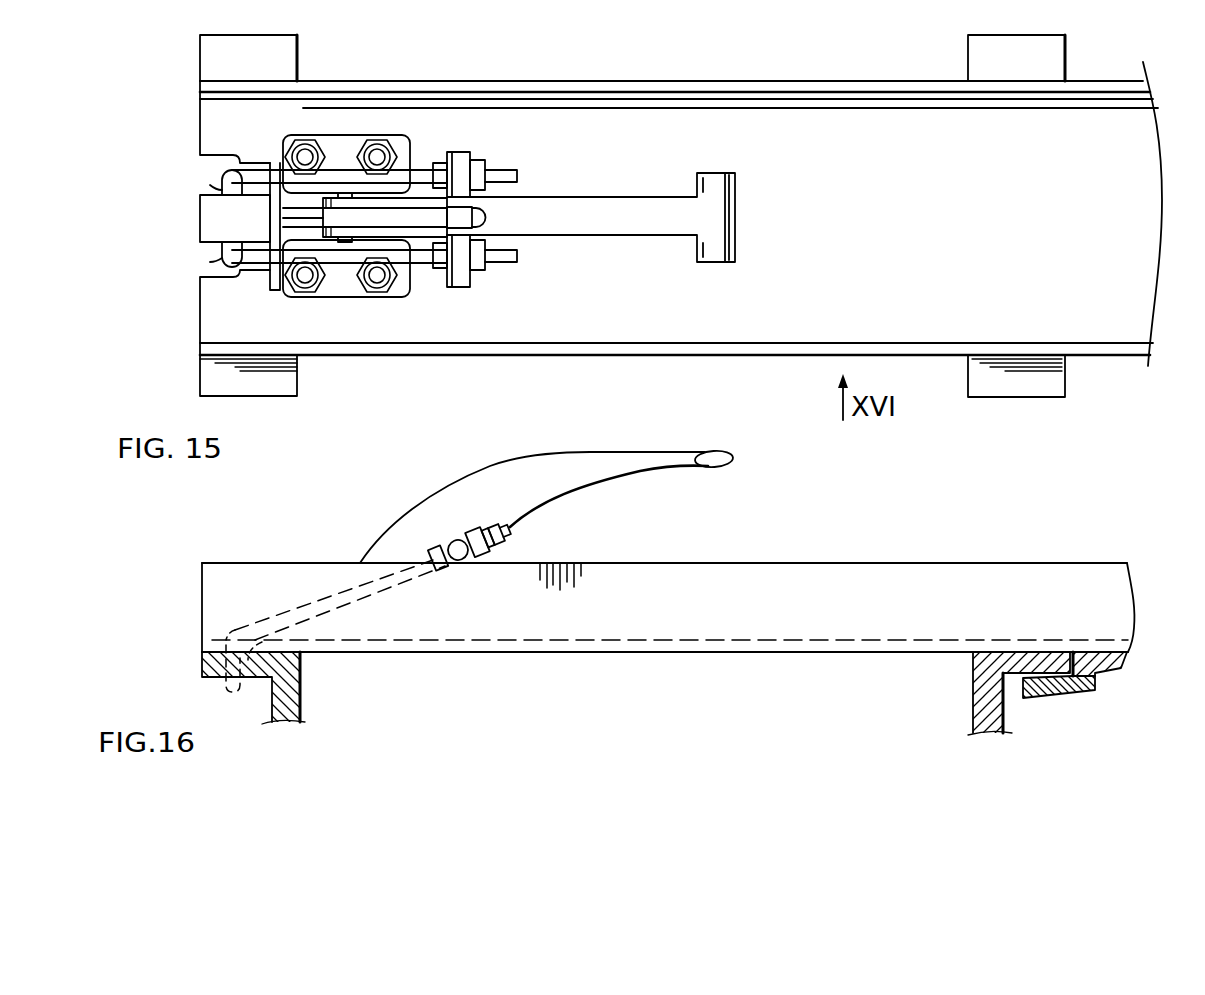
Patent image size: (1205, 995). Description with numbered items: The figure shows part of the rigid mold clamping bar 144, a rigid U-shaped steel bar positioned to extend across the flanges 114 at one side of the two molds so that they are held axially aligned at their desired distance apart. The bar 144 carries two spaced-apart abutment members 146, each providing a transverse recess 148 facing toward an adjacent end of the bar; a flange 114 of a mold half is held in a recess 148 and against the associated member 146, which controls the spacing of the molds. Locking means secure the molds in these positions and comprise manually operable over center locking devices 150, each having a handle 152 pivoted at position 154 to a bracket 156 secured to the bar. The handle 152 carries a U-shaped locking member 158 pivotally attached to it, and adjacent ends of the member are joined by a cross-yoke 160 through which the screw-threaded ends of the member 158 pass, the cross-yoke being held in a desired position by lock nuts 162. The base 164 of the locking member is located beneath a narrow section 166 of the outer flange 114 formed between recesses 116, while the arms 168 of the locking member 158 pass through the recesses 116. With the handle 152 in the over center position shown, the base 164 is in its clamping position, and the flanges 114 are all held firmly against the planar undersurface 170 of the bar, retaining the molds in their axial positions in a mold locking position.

In FIG. 15, the flange 114 is at (282, 61).
In FIG. 16, the flange 114 is at (300, 705).
In FIG. 15, the recess 116 is at (210, 188).
In FIG. 15, the rigid mold clamping bar 144 is at (1038, 183).
In FIG. 16, the abutment member 146 is at (1107, 674).
In FIG. 16, the transverse recess 148 is at (1123, 658).
In FIG. 15, the over center locking device 150 is at (647, 193).
In FIG. 16, the over center locking device 150 is at (558, 446).
In FIG. 15, the handle 152 is at (688, 235).
In FIG. 16, the handle 152 is at (643, 466).
In FIG. 15, the pivot position 154 is at (348, 243).
In FIG. 15, the bracket 156 is at (417, 158).
In FIG. 15, the U-shaped locking member 158 is at (500, 174).
In FIG. 15, the cross-yoke 160 is at (463, 287).
In FIG. 16, the cross-yoke 160 is at (452, 540).
In FIG. 15, the lock nut 162 is at (484, 270).
In FIG. 15, the base of locking member 164 is at (223, 177).
In FIG. 15, the narrow section of outer flange 166 is at (208, 228).
In FIG. 15, the arm of locking member 168 is at (263, 172).
In FIG. 16, the undersurface of the bar 170 is at (828, 652).